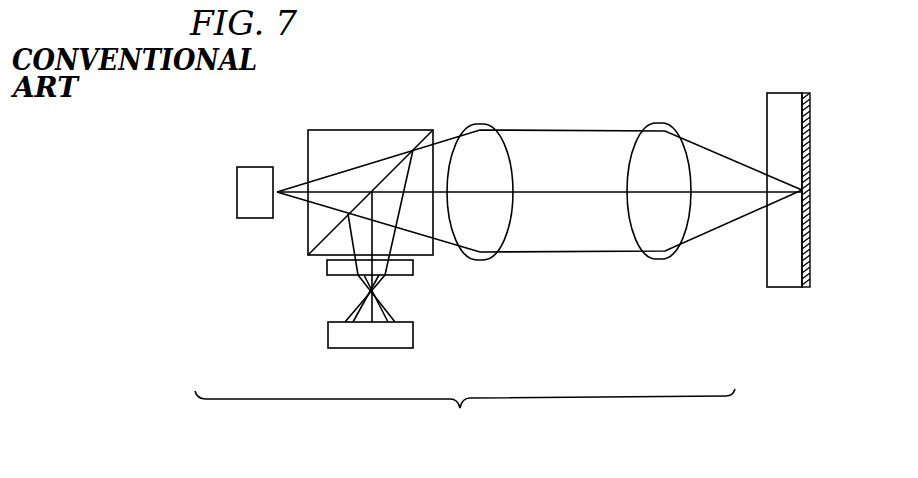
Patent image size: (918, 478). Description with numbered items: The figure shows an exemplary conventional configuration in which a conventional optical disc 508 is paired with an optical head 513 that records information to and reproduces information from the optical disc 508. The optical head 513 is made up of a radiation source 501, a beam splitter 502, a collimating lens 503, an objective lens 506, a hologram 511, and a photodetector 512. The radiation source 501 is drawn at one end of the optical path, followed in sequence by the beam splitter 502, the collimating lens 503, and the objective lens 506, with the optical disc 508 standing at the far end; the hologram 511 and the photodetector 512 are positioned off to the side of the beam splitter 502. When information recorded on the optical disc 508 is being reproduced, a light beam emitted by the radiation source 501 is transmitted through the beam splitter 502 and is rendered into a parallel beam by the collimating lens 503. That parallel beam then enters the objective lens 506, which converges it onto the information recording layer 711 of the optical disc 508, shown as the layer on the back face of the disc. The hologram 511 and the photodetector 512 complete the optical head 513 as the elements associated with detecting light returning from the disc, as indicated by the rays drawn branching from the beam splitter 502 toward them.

The radiation source 501 is at (252, 172).
The beam splitter 502 is at (353, 140).
The collimating lens 503 is at (487, 145).
The objective lens 506 is at (658, 143).
The optical disc 508 is at (782, 98).
The information recording layer 711 is at (812, 142).
The hologram 511 is at (327, 270).
The photodetector 512 is at (342, 340).
The optical head 513 is at (498, 285).